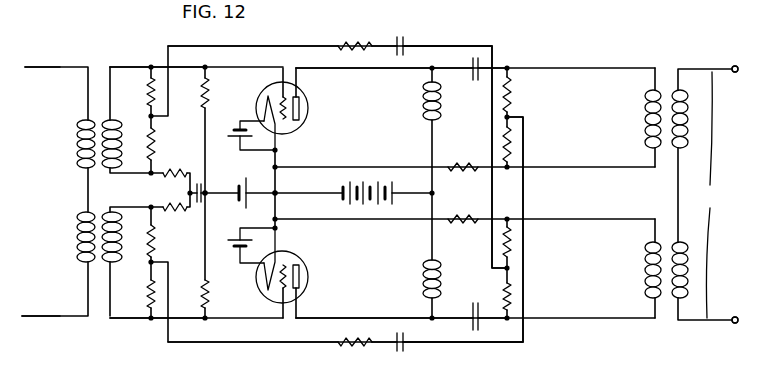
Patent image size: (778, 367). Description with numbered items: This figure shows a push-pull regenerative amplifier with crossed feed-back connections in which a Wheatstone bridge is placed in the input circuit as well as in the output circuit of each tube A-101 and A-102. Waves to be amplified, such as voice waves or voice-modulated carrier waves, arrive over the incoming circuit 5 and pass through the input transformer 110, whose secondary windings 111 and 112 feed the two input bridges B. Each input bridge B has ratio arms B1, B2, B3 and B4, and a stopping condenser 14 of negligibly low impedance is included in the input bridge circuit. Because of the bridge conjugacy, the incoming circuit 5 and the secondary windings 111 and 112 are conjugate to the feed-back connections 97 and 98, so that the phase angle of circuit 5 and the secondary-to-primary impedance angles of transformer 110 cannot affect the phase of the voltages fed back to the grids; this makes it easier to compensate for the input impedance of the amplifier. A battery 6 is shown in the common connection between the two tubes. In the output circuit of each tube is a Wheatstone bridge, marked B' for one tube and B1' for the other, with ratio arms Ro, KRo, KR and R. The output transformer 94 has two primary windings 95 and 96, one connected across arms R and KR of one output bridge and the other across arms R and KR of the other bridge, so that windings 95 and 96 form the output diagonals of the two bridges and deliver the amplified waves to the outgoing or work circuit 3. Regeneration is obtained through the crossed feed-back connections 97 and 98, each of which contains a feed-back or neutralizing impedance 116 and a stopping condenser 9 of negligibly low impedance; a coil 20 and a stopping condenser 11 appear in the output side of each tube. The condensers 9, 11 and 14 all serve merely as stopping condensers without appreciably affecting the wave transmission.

The incoming circuit 5 is at (61, 64).
The input transformer 110 is at (100, 268).
The secondary winding 111 is at (116, 138).
The secondary winding 112 is at (111, 250).
The ratio arm B1 is at (136, 194).
The ratio arm B2 is at (157, 142).
The ratio arm B3 is at (177, 203).
The ratio arm B4 is at (210, 100).
The input bridge B is at (157, 194).
The output Wheatstone bridge B' is at (364, 87).
The bridge output conductor B1' is at (364, 300).
The stopping condenser 14 is at (200, 184).
The amplifier tube A-101 is at (272, 96).
The amplifier tube A-102 is at (273, 296).
The ratio arm Ro is at (290, 128).
The battery 6 is at (343, 188).
The feed-back or neutralizing impedance 116 is at (345, 45).
The stopping condenser 9 is at (401, 44).
The feed-back connection 98 is at (452, 47).
The feed-back connection 97 is at (437, 342).
The inductance coil 20 is at (426, 100).
The stopping condenser 11 is at (472, 82).
The ratio arm R is at (514, 90).
The ratio arm KR is at (520, 148).
The ratio arm KRo is at (475, 173).
The transformer 94 is at (667, 82).
The primary winding 95 is at (648, 122).
The primary winding 96 is at (648, 262).
The outgoing or work circuit 3 is at (720, 194).